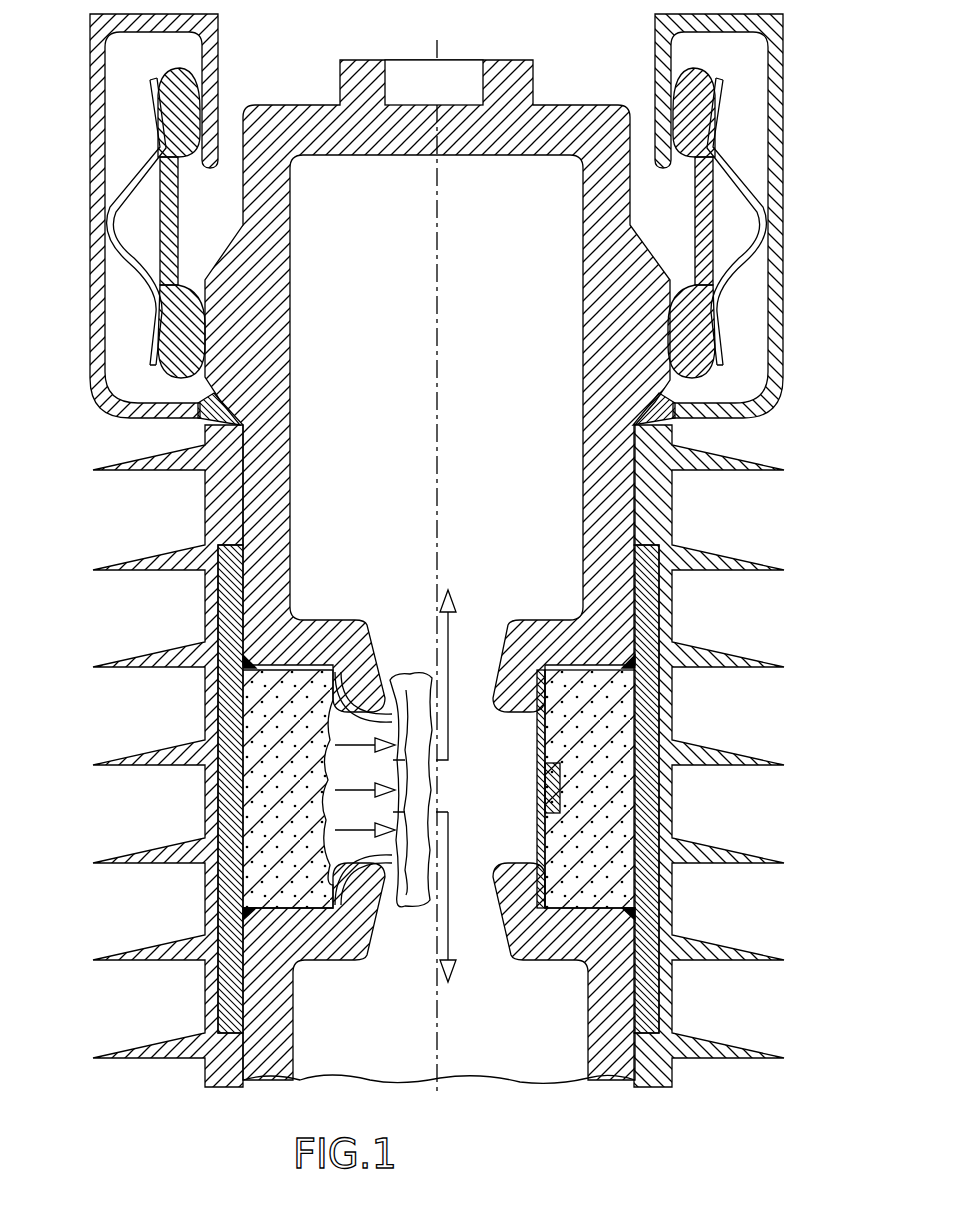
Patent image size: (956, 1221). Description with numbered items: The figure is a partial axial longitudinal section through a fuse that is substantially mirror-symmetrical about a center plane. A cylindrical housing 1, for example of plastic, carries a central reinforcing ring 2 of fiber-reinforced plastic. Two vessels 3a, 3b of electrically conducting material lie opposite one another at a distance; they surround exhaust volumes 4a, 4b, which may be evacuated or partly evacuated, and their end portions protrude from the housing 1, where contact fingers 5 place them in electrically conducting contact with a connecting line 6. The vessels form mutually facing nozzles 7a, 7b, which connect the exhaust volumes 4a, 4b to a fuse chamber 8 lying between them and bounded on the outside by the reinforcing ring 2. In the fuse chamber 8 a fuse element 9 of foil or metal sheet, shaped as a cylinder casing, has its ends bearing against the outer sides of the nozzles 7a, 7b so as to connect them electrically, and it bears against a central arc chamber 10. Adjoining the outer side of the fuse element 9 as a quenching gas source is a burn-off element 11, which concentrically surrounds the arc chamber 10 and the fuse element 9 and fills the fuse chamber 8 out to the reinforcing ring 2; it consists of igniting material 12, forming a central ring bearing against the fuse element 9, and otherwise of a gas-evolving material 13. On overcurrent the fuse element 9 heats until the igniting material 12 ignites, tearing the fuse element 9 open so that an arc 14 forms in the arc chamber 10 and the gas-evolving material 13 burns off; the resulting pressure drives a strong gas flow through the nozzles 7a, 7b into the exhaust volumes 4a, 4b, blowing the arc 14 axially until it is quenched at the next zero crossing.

The housing 1 is at (677, 508).
The reinforcing ring 2 is at (650, 607).
The vessel 3a is at (581, 125).
The vessel 3b is at (608, 1045).
The exhaust volume 4a is at (392, 401).
The exhaust volume 4b is at (392, 1041).
The contact fingers 5 is at (178, 332).
The connecting line 6 is at (95, 46).
The nozzle 7a is at (497, 705).
The nozzle 7b is at (492, 868).
The fuse chamber 8 is at (245, 712).
The fuse element 9 is at (535, 737).
The arc chamber 10 is at (492, 806).
The burn-off element 11 is at (665, 792).
The igniting material 12 is at (555, 795).
The gas-evolving material 13 is at (607, 702).
The arc 14 is at (410, 882).